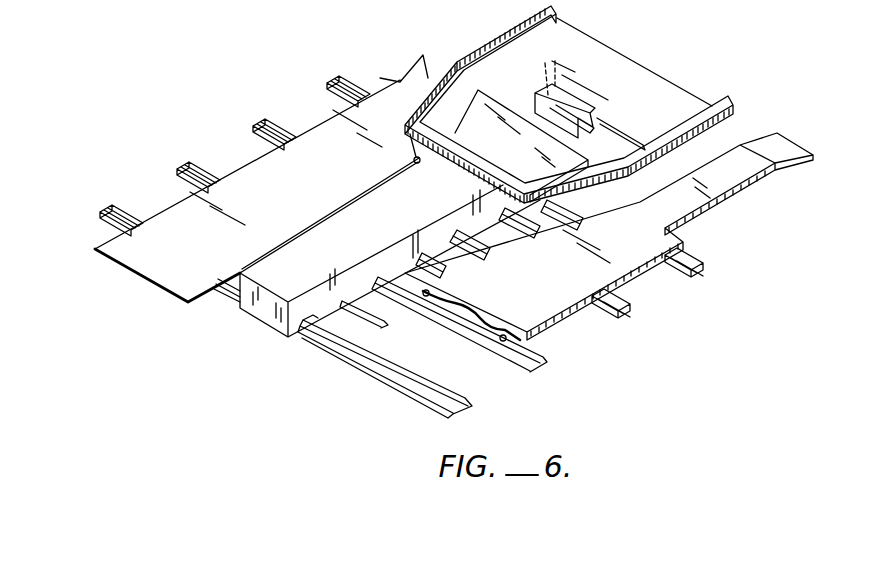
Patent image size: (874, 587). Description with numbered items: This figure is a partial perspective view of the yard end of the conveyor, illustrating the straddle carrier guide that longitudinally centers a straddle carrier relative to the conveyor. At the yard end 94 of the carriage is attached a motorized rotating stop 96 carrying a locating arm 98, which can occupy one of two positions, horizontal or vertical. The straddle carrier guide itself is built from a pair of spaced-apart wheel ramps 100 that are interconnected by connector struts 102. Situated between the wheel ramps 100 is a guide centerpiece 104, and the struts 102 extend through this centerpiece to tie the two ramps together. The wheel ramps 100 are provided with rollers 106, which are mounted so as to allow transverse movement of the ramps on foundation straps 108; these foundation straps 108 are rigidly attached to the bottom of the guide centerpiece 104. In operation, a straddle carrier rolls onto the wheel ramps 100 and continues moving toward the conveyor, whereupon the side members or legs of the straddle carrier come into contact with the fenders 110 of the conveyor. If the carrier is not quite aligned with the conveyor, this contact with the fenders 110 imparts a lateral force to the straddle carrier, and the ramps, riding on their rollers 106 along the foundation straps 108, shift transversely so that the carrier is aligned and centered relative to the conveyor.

The yard end 94 is at (488, 70).
The motorized rotating stop 96 is at (538, 118).
The locating arm 98 is at (597, 122).
The wheel ramps 100 is at (236, 166).
The connector struts 102 is at (447, 260).
The guide centerpiece 104 is at (268, 312).
The rollers 106 is at (490, 346).
The foundation straps 108 is at (285, 122).
The fenders 110 is at (495, 32).